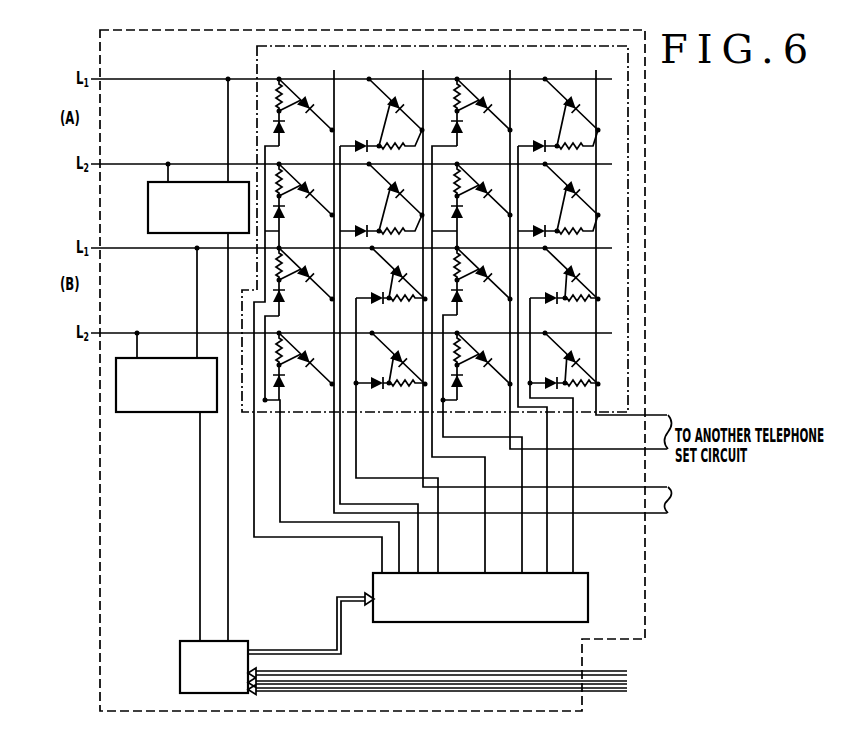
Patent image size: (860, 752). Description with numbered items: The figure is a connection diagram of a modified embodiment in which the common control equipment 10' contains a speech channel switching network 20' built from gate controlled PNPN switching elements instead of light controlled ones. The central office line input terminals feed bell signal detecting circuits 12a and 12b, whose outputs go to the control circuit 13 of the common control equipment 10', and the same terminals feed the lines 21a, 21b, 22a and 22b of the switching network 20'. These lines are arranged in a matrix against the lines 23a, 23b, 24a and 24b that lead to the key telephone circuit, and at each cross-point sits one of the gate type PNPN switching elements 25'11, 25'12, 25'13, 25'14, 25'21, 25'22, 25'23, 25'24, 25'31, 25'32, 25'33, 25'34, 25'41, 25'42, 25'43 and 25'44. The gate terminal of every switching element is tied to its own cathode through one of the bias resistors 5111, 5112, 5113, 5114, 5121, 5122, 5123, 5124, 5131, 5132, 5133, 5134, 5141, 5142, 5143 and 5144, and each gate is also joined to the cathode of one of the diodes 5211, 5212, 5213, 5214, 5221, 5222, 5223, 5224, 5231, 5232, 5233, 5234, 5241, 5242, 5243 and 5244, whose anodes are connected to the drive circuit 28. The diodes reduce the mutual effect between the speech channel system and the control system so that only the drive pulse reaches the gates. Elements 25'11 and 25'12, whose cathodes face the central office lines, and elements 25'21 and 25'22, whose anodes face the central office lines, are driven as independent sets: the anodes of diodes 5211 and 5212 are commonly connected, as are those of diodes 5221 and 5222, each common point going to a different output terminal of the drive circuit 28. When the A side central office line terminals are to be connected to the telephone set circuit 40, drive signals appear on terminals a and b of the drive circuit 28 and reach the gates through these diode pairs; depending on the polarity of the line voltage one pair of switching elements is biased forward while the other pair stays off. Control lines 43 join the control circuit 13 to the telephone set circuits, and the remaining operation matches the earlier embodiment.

The common control equipment 10' is at (474, 370).
The speech channel switching network 20' is at (542, 229).
The bell signal detecting circuit 12a is at (148, 214).
The bell signal detecting circuit 12b is at (122, 412).
The control circuit 13 is at (180, 641).
The line 21a is at (351, 69).
The line 21b is at (351, 153).
The line 22a is at (351, 237).
The line 22b is at (351, 322).
The line 23a is at (495, 282).
The line 23b is at (539, 269).
The line 24a is at (583, 250).
The line 24b is at (626, 233).
The drive circuit 28 is at (588, 598).
The telephone set circuit 40 is at (732, 510).
The control signal lines 43 is at (494, 671).
The bias resistor 5111 is at (276, 95).
The bias resistor 5112 is at (276, 185).
The bias resistor 5113 is at (276, 270).
The bias resistor 5114 is at (286, 352).
The bias resistor 5121 is at (393, 143).
The bias resistor 5122 is at (393, 228).
The bias resistor 5123 is at (403, 302).
The bias resistor 5124 is at (403, 386).
The bias resistor 5131 is at (455, 95).
The bias resistor 5132 is at (462, 185).
The bias resistor 5133 is at (463, 265).
The bias resistor 5134 is at (465, 385).
The bias resistor 5141 is at (570, 143).
The bias resistor 5142 is at (570, 228).
The bias resistor 5143 is at (577, 302).
The bias resistor 5144 is at (580, 386).
The diode 5211 is at (286, 128).
The diode 5212 is at (286, 213).
The diode 5213 is at (286, 298).
The diode 5214 is at (283, 393).
The diode 5221 is at (372, 124).
The diode 5222 is at (370, 216).
The diode 5223 is at (372, 296).
The diode 5224 is at (373, 381).
The diode 5231 is at (450, 127).
The diode 5232 is at (463, 217).
The diode 5233 is at (463, 305).
The diode 5234 is at (459, 400).
The diode 5241 is at (550, 133).
The diode 5242 is at (545, 216).
The diode 5243 is at (548, 288).
The diode 5244 is at (558, 371).
The gate type PNPN switching element 25'11 is at (307, 90).
The gate type PNPN switching element 25'12 is at (307, 178).
The gate type PNPN switching element 25'13 is at (307, 262).
The gate type PNPN switching element 25'14 is at (307, 363).
The gate type PNPN switching element 25'21 is at (397, 98).
The gate type PNPN switching element 25'22 is at (385, 197).
The gate type PNPN switching element 25'23 is at (386, 275).
The gate type PNPN switching element 25'24 is at (393, 360).
The gate type PNPN switching element 25'31 is at (485, 109).
The gate type PNPN switching element 25'32 is at (485, 195).
The gate type PNPN switching element 25'33 is at (485, 279).
The gate type PNPN switching element 25'34 is at (485, 363).
The gate type PNPN switching element 25'41 is at (573, 98).
The gate type PNPN switching element 25'42 is at (560, 197).
The gate type PNPN switching element 25'43 is at (587, 275).
The gate type PNPN switching element 25'44 is at (587, 360).